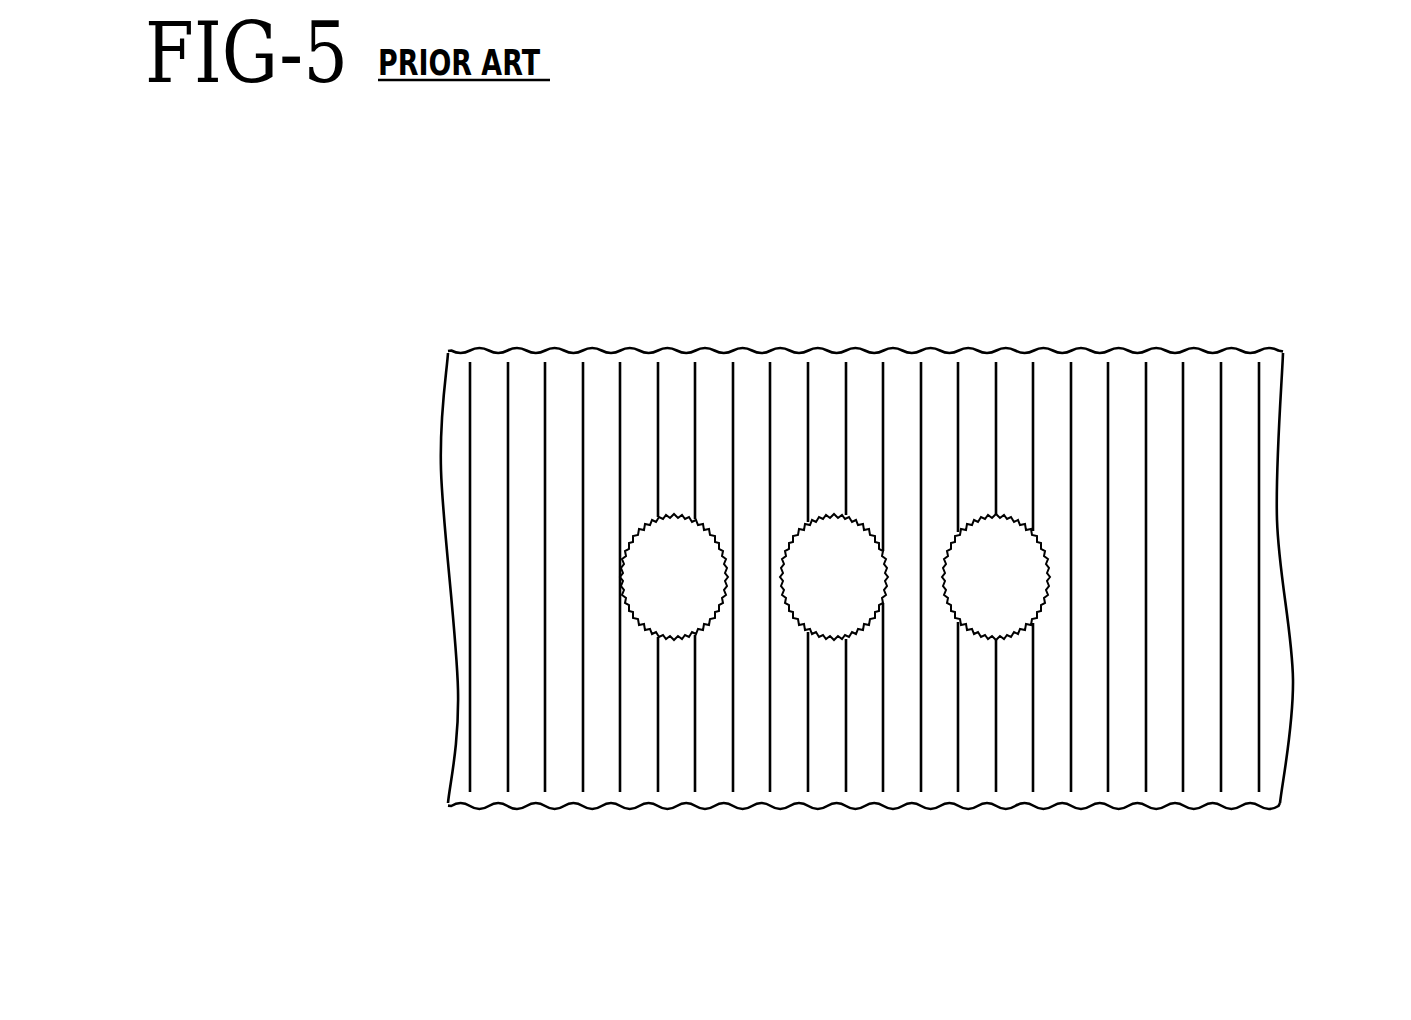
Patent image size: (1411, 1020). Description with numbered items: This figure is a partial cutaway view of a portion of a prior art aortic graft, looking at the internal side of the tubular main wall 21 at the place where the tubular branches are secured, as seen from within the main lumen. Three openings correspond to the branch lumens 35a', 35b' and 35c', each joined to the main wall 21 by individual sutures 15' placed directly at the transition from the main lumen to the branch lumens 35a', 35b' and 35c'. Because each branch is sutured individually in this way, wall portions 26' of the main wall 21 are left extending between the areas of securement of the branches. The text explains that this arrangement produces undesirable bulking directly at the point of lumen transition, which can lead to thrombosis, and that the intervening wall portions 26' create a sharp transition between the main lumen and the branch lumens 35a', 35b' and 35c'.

The tubular main wall 21 is at (1267, 387).
The wall portions 26' is at (834, 461).
The branch lumen 35a' is at (664, 439).
The branch lumen 35b' is at (834, 413).
The branch lumen 35c' is at (996, 420).
The sutures 15' is at (845, 639).